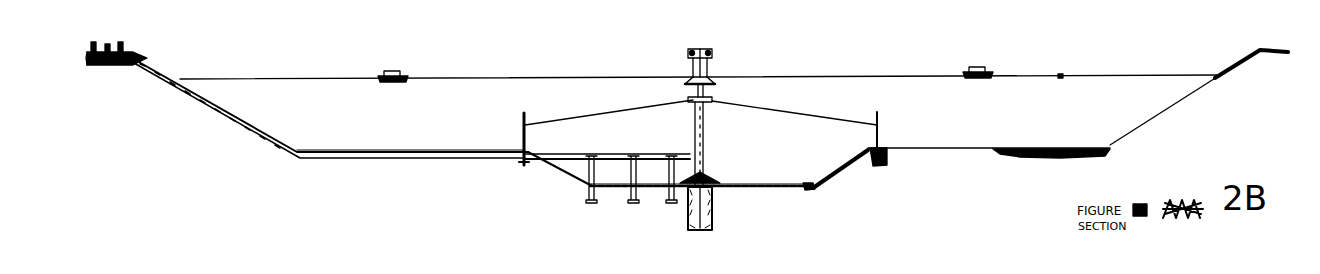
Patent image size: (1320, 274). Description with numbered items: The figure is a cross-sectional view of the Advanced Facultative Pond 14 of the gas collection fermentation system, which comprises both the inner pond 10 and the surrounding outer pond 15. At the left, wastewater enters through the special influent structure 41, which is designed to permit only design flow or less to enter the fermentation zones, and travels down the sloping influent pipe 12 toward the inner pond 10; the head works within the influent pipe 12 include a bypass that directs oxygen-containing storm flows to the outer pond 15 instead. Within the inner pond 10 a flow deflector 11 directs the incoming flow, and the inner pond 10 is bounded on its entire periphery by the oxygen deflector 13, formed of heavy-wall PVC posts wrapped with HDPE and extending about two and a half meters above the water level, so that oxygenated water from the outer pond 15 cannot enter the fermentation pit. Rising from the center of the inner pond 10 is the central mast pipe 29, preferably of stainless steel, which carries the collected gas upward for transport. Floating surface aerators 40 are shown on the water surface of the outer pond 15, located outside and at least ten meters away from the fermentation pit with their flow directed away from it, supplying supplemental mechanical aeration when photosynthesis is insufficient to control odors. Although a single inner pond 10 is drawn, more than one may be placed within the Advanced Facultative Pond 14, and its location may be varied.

The inner pond 10 is at (580, 172).
The flow deflector 11 is at (710, 177).
The influent pipe 12 is at (607, 153).
The oxygen deflector 13 is at (522, 127).
The Advanced Facultative Pond 14 is at (960, 160).
The outer pond 15 is at (960, 118).
The central mast pipe 29 is at (705, 143).
The floating or surface aerators 40 is at (380, 72).
The special influent structure 41 is at (123, 38).